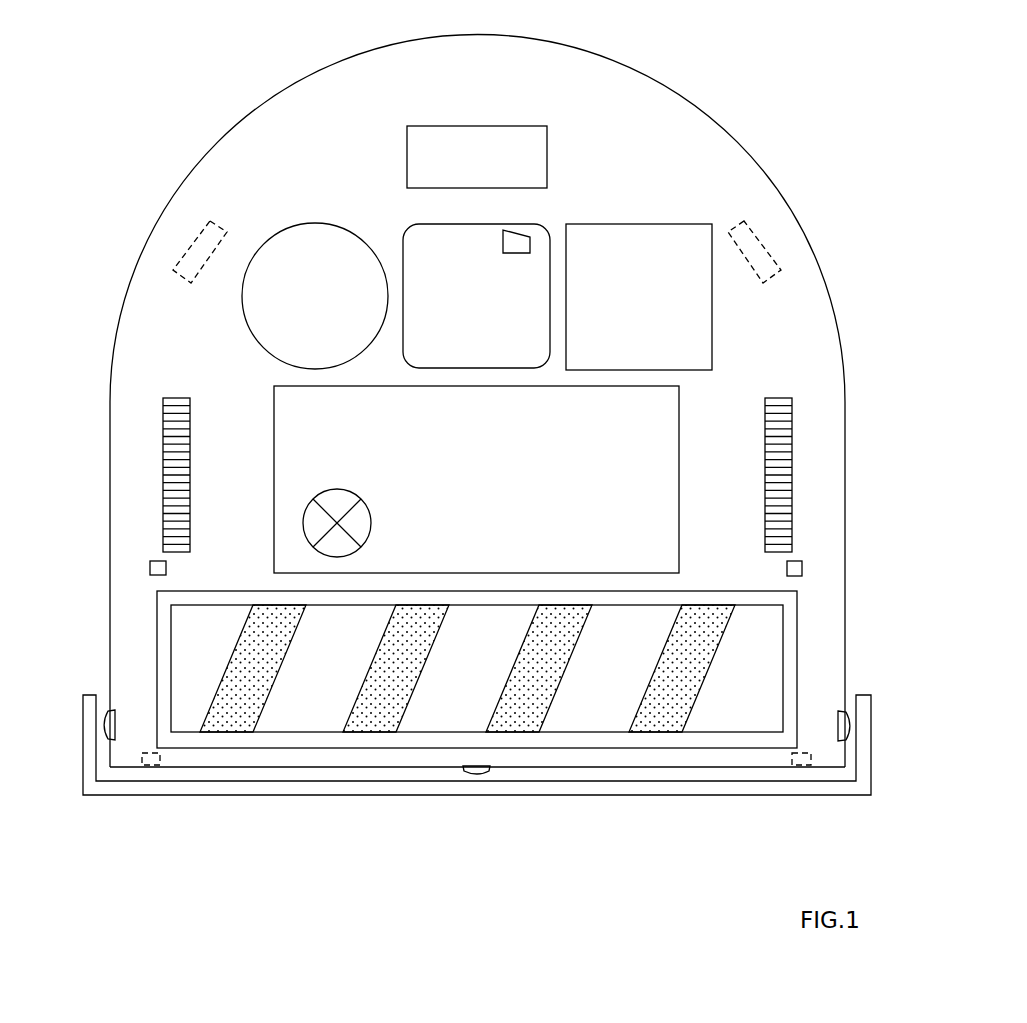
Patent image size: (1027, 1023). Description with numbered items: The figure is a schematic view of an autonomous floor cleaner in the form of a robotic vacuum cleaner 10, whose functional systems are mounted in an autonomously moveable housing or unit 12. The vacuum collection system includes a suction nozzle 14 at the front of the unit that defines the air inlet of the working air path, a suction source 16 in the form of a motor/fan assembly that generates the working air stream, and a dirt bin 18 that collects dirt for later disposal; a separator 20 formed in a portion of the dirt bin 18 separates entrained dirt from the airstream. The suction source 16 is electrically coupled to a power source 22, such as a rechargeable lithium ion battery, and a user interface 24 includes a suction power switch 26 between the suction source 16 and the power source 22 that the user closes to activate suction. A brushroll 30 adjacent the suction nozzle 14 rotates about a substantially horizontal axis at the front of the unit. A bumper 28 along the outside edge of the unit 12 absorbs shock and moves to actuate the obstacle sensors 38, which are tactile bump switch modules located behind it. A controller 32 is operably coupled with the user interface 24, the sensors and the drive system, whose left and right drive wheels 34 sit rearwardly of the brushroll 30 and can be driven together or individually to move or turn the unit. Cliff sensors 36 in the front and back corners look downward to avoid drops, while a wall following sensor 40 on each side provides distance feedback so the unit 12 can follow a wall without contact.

The robotic vacuum cleaner 10 is at (220, 56).
The housing or unit 12 is at (122, 292).
The suction nozzle 14 is at (450, 748).
The suction source 16 is at (330, 232).
The dirt bin 18 is at (670, 537).
The separator 20 is at (371, 521).
The power source 22 is at (637, 226).
The user interface 24 is at (432, 243).
The suction power switch 26 is at (532, 240).
The bumper 28 is at (309, 793).
The brushroll 30 is at (170, 633).
The controller 32 is at (490, 137).
The drive wheels 34 is at (178, 474).
The cliff sensors 36 is at (194, 243).
The obstacle sensors 38 is at (104, 725).
The wall following sensor 40 is at (150, 565).